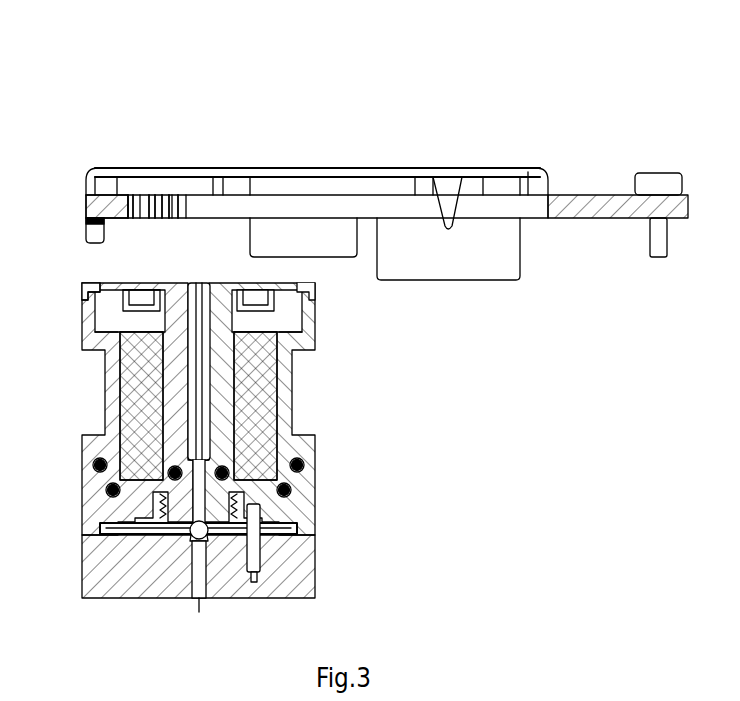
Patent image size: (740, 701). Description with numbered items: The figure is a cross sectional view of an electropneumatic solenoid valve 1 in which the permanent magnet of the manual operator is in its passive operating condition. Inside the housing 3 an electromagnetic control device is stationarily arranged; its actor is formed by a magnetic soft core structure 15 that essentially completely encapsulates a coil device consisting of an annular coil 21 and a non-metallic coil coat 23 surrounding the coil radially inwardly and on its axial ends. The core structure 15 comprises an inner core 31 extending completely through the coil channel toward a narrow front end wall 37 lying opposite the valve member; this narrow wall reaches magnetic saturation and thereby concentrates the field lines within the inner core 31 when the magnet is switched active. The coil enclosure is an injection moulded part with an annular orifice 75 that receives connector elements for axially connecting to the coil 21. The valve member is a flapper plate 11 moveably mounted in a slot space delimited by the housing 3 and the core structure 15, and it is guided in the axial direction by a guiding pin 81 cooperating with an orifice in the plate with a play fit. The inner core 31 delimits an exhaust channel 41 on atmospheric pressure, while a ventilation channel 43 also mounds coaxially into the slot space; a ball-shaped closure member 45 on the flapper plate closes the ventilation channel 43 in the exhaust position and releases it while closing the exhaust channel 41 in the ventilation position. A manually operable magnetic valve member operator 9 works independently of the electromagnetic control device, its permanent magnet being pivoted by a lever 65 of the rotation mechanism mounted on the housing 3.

The solenoid valve 1 is at (281, 403).
The housing 3 is at (110, 568).
The valve member operator 9 is at (387, 361).
The flapper plate 11 is at (238, 545).
The core structure 15 is at (102, 290).
The coil 21 is at (252, 406).
The coil coat 23 is at (269, 297).
The inner core 31 is at (197, 374).
The front end wall 37 is at (146, 290).
The exhaust channel 41 is at (208, 370).
The ventilation channel 43 is at (192, 573).
The closure member 45 is at (185, 530).
The lever 65 is at (608, 203).
The annular orifice 75 is at (253, 296).
The guiding pin 81 is at (258, 560).